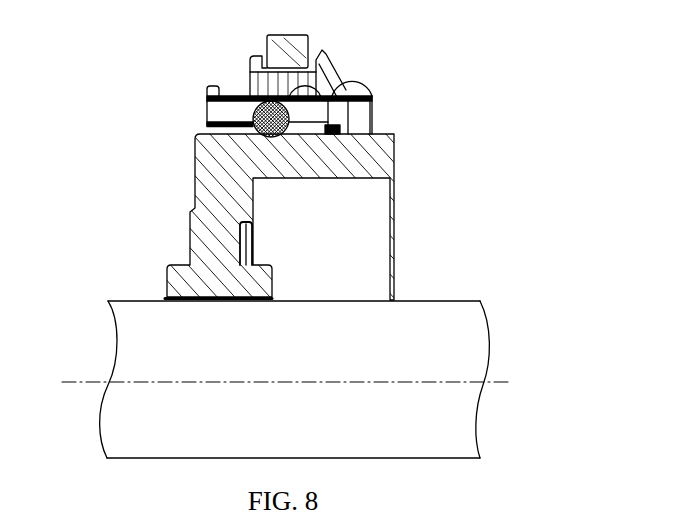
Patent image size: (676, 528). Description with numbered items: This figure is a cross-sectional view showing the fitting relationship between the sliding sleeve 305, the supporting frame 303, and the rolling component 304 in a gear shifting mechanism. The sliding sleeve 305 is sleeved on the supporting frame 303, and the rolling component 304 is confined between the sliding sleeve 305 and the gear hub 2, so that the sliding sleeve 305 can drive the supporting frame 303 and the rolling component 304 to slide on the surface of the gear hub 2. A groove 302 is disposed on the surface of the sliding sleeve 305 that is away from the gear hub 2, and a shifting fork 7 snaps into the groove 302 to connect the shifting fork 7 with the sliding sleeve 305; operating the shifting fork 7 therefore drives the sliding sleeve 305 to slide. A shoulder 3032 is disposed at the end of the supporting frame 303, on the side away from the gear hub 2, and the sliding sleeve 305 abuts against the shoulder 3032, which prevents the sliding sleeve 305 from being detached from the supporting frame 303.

The shifting fork 7 is at (287, 58).
The groove 302 is at (322, 55).
The shoulder 3032 is at (207, 93).
The supporting frame 303 is at (234, 106).
The sliding sleeve 305 is at (355, 84).
The rolling component 304 is at (335, 130).
The gear hub 2 is at (313, 152).